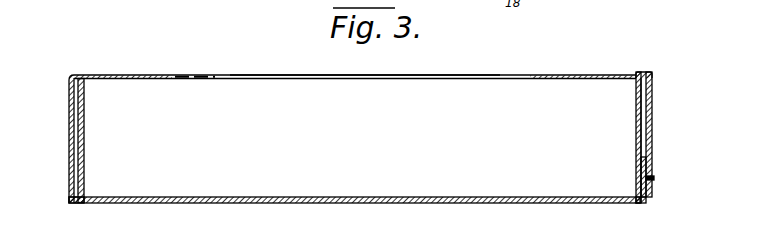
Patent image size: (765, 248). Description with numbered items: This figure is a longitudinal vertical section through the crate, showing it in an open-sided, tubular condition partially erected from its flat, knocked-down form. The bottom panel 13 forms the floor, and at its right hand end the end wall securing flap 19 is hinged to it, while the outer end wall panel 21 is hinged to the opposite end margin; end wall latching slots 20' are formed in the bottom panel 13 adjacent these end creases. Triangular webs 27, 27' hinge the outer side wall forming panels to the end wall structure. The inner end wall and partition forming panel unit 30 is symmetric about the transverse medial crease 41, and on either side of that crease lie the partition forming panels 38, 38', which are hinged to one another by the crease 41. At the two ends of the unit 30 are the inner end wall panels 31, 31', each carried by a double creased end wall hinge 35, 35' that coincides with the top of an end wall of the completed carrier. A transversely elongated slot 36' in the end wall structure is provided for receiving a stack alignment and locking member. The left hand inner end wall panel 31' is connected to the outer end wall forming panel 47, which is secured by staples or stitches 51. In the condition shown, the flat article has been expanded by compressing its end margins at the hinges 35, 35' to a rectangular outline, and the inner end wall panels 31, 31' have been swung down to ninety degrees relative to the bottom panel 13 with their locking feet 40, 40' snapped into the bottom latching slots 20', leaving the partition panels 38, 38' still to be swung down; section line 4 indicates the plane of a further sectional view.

The bottom panel 13 is at (445, 204).
The end wall securing flap 19 is at (641, 165).
The end wall latching slots 20' is at (46, 218).
The outer end wall panel 21 is at (70, 147).
The triangular webs 27 is at (355, 61).
The triangular webs 27' is at (583, 60).
The inner end wall and partition forming panel unit 30 is at (239, 68).
The inner end wall panel 31 is at (104, 141).
The inner end wall panel 31' is at (608, 137).
The double creased end wall hinge 35 is at (73, 59).
The double creased end wall hinge 35' is at (684, 66).
The transversely elongated slot 36' is at (660, 54).
The partition forming panel 38 is at (280, 61).
The partition forming panel 38' is at (450, 61).
The locking feet 40 is at (83, 219).
The locking feet 40' is at (671, 209).
The transverse medial crease 41 is at (362, 74).
The outer end wall forming panel 47 is at (652, 108).
The staples or stitches 51 is at (654, 180).
The section line 4- 4 is at (638, 57).